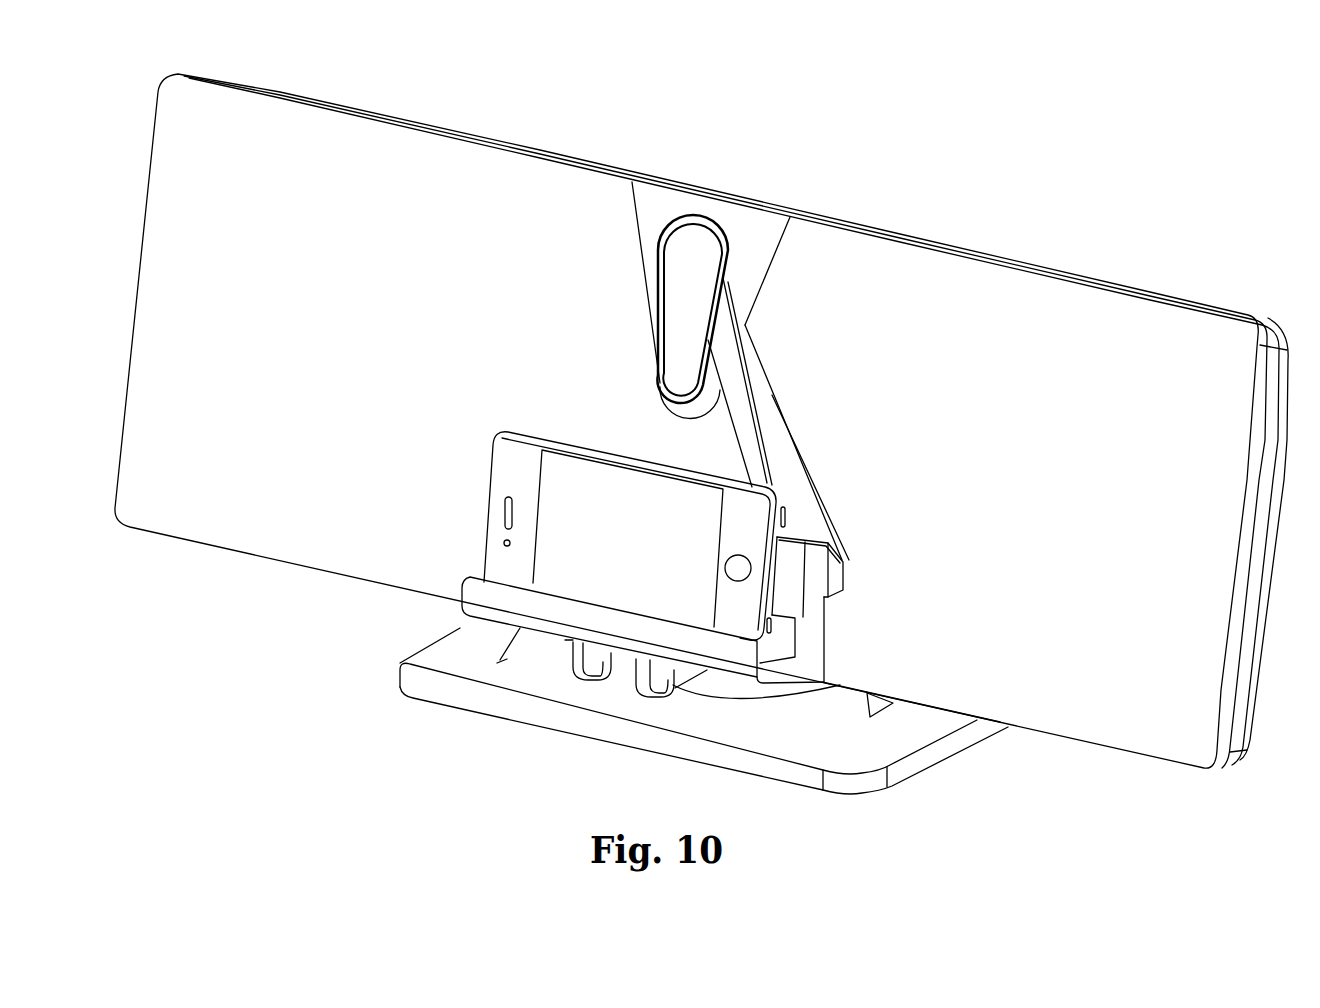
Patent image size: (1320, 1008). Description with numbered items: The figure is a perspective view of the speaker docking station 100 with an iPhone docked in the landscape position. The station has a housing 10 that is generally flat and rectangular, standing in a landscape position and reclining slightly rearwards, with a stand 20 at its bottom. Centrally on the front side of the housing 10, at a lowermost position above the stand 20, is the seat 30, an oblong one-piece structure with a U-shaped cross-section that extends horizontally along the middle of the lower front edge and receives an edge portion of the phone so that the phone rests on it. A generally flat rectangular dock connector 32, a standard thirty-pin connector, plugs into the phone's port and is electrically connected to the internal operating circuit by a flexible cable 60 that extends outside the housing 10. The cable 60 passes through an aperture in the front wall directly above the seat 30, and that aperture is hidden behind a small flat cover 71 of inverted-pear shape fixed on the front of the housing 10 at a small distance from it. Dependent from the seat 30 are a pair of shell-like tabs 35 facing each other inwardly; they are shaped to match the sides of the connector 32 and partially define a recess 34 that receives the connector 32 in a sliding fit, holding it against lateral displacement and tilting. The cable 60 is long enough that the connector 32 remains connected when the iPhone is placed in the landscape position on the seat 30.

The speaker docking station 100 is at (963, 160).
The housing 10 is at (1172, 302).
The stand 20 is at (450, 652).
The seat 30 is at (523, 628).
The dock connector 32 is at (813, 610).
The recess 34 is at (620, 675).
The shell-like tabs 35 is at (587, 680).
The flexible cable 60 is at (762, 422).
The cover 71 is at (685, 303).